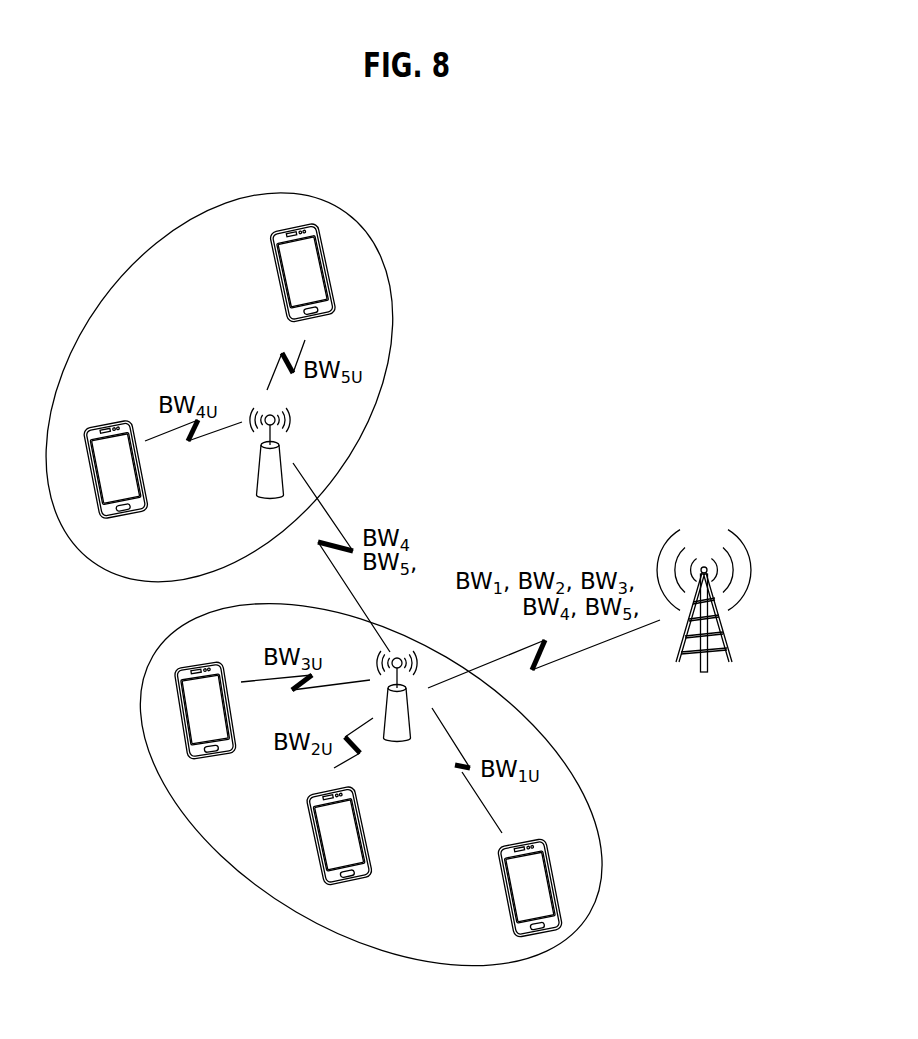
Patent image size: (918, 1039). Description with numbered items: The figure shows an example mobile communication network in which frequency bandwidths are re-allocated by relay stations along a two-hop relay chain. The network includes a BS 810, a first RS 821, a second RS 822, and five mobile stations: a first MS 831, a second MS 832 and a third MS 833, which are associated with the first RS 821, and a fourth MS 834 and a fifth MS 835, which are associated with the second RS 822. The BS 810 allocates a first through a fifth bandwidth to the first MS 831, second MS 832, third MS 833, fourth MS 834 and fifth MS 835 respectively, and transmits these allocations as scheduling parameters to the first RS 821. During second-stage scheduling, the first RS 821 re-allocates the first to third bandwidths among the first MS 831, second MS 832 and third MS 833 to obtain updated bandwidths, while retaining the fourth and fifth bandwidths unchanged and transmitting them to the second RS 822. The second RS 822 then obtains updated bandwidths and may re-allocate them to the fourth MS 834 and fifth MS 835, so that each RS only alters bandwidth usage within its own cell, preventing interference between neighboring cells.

The BS 810 is at (730, 661).
The first RS 821 is at (393, 742).
The second RS 822 is at (257, 470).
The first MS 831 is at (512, 937).
The second MS 832 is at (320, 887).
The third MS 833 is at (215, 762).
The fourth MS 834 is at (98, 518).
The fifth MS 835 is at (313, 225).